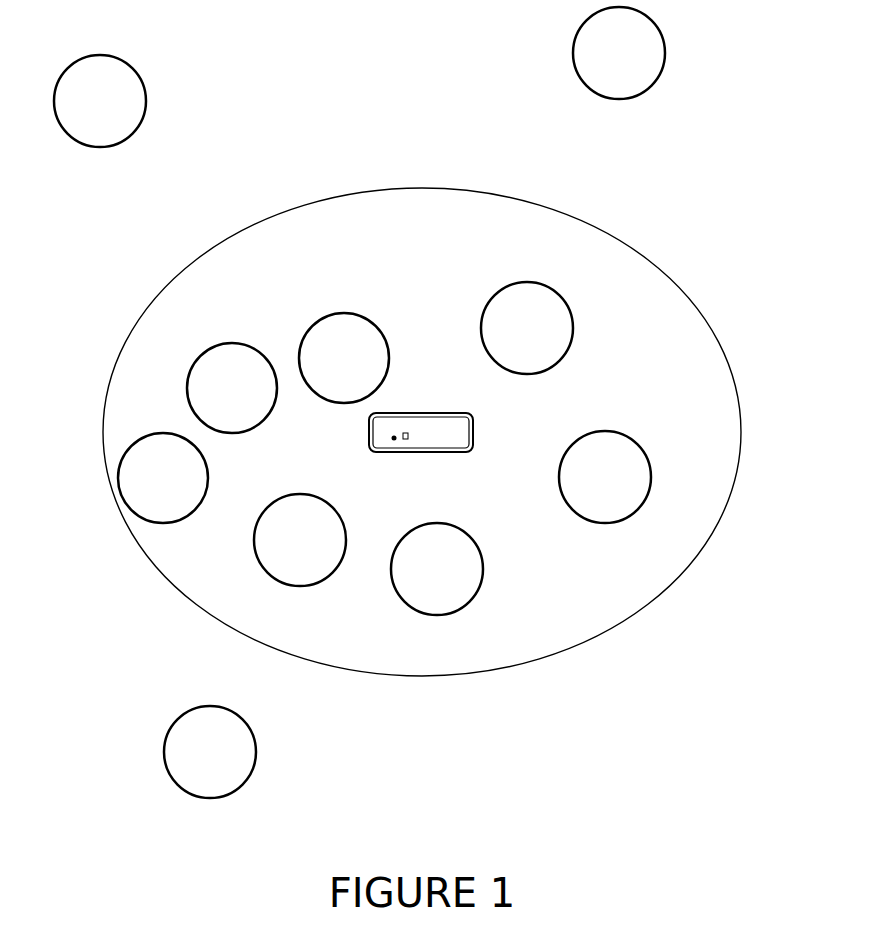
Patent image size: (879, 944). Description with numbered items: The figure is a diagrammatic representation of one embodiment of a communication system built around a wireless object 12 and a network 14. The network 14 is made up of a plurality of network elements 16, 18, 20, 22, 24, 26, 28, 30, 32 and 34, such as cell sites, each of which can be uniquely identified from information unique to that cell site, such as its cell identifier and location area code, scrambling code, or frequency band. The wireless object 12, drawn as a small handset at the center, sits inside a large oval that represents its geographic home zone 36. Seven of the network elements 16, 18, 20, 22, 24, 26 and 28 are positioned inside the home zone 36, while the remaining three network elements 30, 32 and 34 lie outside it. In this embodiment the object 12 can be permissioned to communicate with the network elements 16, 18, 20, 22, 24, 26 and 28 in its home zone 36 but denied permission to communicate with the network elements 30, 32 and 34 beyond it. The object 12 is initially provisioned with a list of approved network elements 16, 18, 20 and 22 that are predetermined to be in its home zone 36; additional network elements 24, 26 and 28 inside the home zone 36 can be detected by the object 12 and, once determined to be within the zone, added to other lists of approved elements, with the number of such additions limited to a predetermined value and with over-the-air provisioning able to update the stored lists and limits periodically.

The wireless object 12 is at (473, 432).
The network 14 is at (655, 662).
The network element 16 is at (344, 313).
The network element 18 is at (573, 327).
The network element 20 is at (651, 497).
The network element 22 is at (437, 615).
The network element 24 is at (187, 388).
The network element 26 is at (300, 586).
The network element 28 is at (118, 480).
The network element 30 is at (256, 735).
The network element 32 is at (128, 63).
The network element 34 is at (657, 30).
The home zone 36 is at (648, 605).